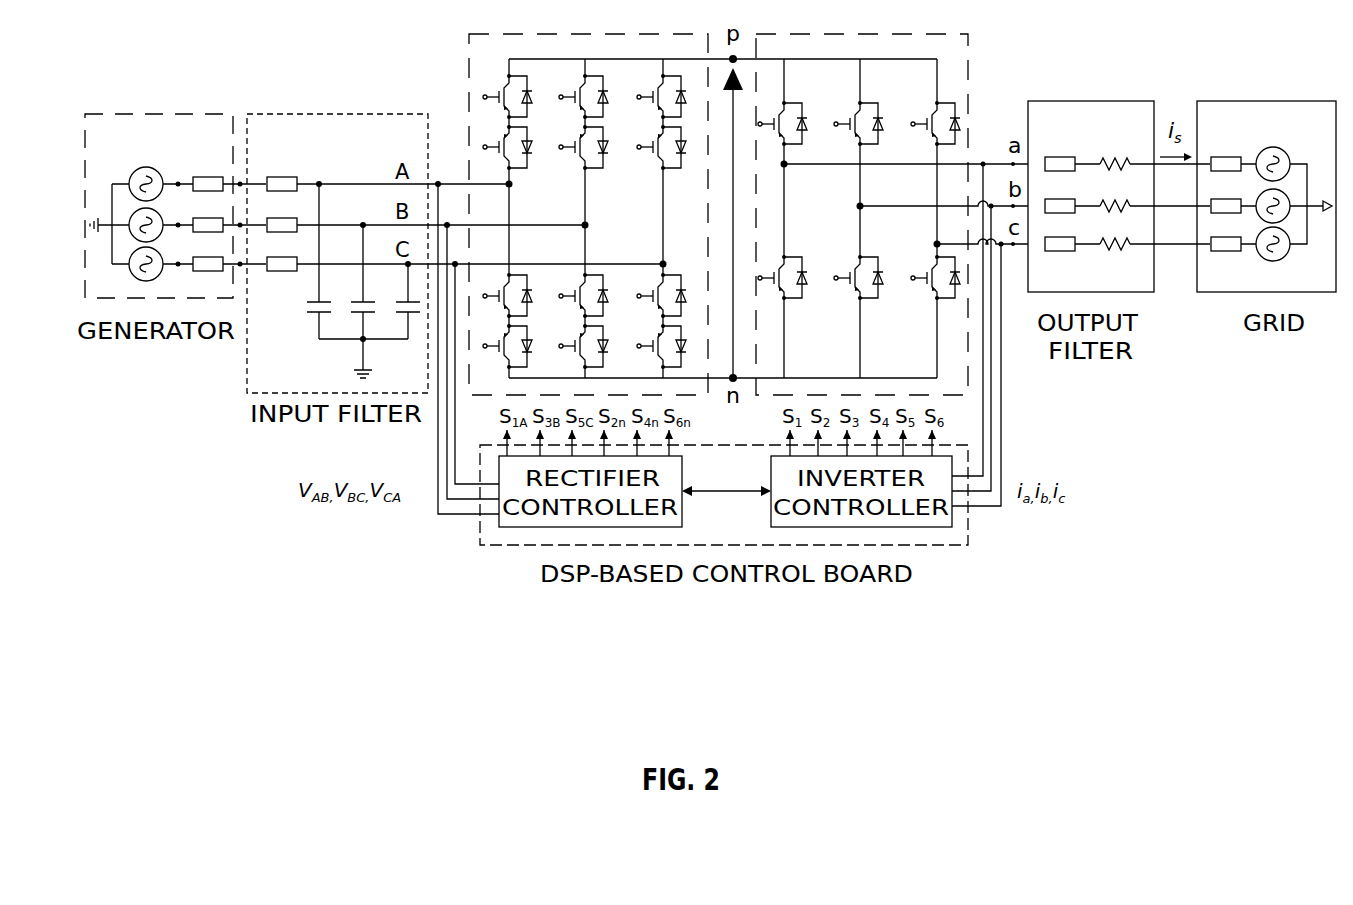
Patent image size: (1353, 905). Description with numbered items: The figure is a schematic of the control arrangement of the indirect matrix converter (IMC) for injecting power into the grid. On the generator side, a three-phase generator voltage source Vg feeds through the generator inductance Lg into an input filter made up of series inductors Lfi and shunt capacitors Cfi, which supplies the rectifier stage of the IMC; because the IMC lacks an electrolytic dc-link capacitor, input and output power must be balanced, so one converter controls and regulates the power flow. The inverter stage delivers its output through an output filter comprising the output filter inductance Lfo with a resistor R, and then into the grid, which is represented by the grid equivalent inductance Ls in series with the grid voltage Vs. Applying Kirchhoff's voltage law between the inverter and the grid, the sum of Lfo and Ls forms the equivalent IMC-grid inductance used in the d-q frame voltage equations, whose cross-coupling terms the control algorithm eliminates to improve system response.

The generator voltage source Vg is at (126, 205).
The generator inductance Lg is at (208, 200).
The input filter inductor Lfi is at (279, 200).
The input filter capacitor Cfi is at (344, 281).
The output filter inductance Lfo is at (1060, 187).
The output filter damping resistor R is at (1115, 186).
The grid equivalent inductance Ls is at (1226, 187).
The grid voltage Vs is at (1273, 189).